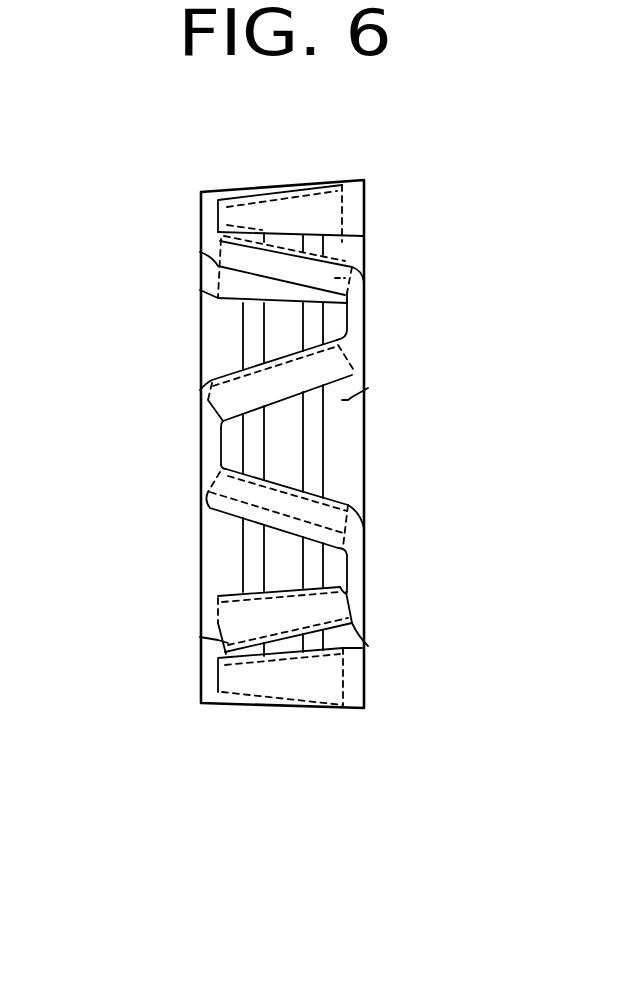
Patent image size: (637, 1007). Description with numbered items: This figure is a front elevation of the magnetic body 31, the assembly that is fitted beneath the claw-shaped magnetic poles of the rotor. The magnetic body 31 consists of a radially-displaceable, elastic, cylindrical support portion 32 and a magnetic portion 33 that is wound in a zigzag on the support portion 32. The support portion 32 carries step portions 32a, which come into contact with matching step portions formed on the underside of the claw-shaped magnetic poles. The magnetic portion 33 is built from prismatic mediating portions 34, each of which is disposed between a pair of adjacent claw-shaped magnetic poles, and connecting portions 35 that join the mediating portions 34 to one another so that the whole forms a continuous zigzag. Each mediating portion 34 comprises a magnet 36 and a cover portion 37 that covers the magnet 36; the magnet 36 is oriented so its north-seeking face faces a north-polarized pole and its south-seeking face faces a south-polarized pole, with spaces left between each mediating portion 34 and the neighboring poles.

The magnetic body 31 is at (292, 444).
The support portion 32 is at (201, 347).
The step portions 32a is at (293, 460).
The magnetic portion 33 is at (295, 445).
The mediating portions 34 is at (260, 517).
The connecting portions 35 is at (352, 322).
The magnet 36 is at (352, 275).
The cover portion 37 is at (368, 646).